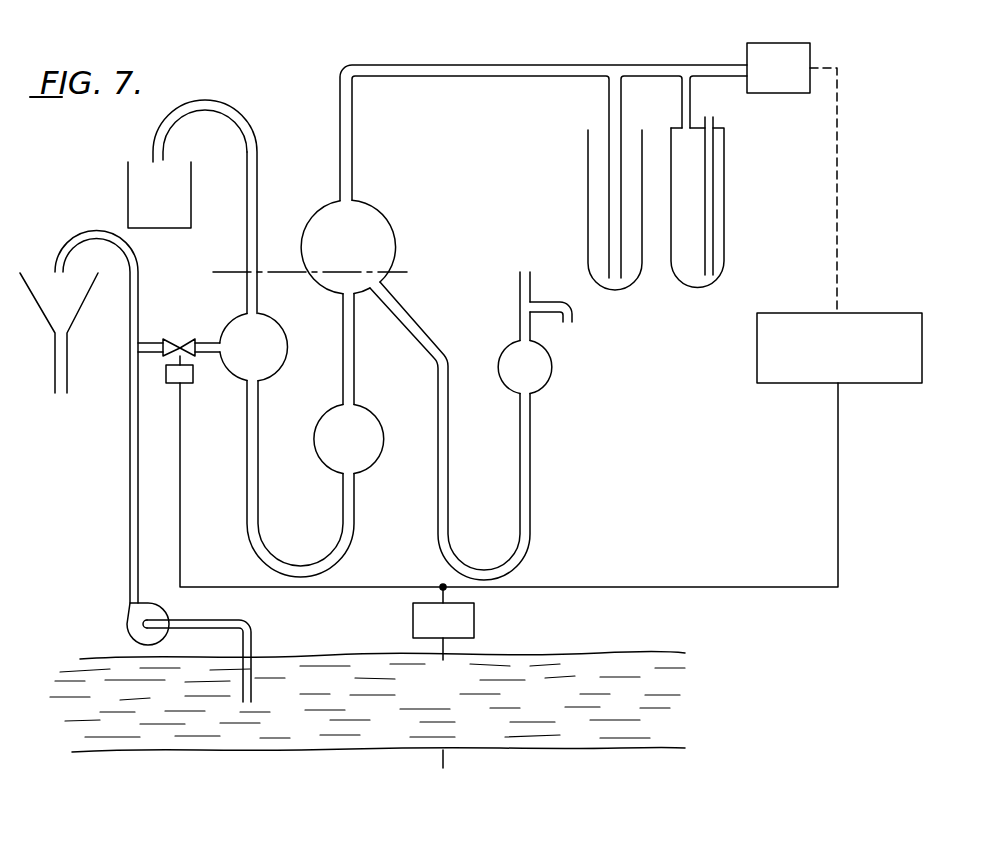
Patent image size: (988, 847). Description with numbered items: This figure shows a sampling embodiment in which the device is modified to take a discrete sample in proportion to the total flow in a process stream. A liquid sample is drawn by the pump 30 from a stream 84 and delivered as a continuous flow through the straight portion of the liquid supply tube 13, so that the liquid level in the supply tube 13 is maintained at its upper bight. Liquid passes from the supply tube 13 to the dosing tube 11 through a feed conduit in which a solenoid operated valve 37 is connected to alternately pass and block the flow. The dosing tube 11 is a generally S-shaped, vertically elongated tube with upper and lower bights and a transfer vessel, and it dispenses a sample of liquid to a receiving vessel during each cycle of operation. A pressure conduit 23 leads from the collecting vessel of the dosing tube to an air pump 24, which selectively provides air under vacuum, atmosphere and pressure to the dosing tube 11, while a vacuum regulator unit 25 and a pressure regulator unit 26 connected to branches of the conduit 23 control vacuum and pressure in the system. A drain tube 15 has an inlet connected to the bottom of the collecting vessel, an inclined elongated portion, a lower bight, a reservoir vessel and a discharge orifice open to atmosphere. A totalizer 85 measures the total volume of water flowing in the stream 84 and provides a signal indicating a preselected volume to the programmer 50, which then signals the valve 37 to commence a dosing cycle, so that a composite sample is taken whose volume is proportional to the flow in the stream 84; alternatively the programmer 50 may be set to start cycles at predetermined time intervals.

The dosing tube 11 is at (303, 504).
The liquid supply tube 13 is at (108, 382).
The drain tube 15 is at (495, 489).
The pressure conduit 23 is at (420, 65).
The air pump 24 is at (791, 42).
The vacuum regulator unit 25 is at (737, 186).
The pressure regulator unit 26 is at (586, 182).
The pump 30 is at (130, 625).
The solenoid operated valve 37 is at (181, 346).
The programmer 50 is at (790, 313).
The stream 84 is at (618, 666).
The totalizer 85 is at (474, 625).